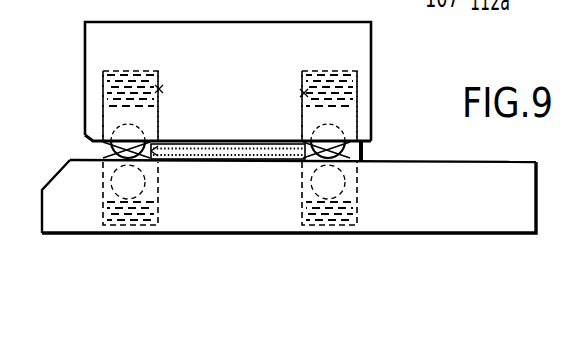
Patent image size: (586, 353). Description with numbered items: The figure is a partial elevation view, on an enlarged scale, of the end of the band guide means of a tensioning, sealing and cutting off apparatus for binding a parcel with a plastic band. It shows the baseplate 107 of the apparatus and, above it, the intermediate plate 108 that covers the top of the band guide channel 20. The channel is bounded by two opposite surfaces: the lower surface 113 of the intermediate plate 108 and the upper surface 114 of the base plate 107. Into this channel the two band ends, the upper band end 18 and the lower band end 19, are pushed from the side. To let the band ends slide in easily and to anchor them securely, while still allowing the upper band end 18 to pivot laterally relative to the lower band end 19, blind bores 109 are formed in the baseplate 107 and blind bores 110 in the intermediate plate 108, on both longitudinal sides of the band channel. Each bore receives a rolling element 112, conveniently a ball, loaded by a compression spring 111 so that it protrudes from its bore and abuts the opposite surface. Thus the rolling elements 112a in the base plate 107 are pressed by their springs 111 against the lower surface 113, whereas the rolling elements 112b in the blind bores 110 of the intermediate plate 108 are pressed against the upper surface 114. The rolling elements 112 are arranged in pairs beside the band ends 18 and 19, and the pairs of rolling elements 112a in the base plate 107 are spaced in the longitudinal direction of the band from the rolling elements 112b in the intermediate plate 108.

The upper band end 18 is at (203, 140).
The lower band end 19 is at (220, 163).
The band guide channel 20 is at (183, 163).
The baseplate 107 is at (452, 212).
The intermediate plate 108 is at (222, 40).
The blind bores 109 is at (173, 235).
The blind bores 110 is at (160, 88).
The compression springs 111 is at (113, 73).
The rolling elements 112 is at (358, 112).
The rolling elements 112a is at (107, 181).
The rolling elements 112b is at (112, 114).
The lower surface 113 is at (250, 140).
The upper surface 114 is at (252, 163).